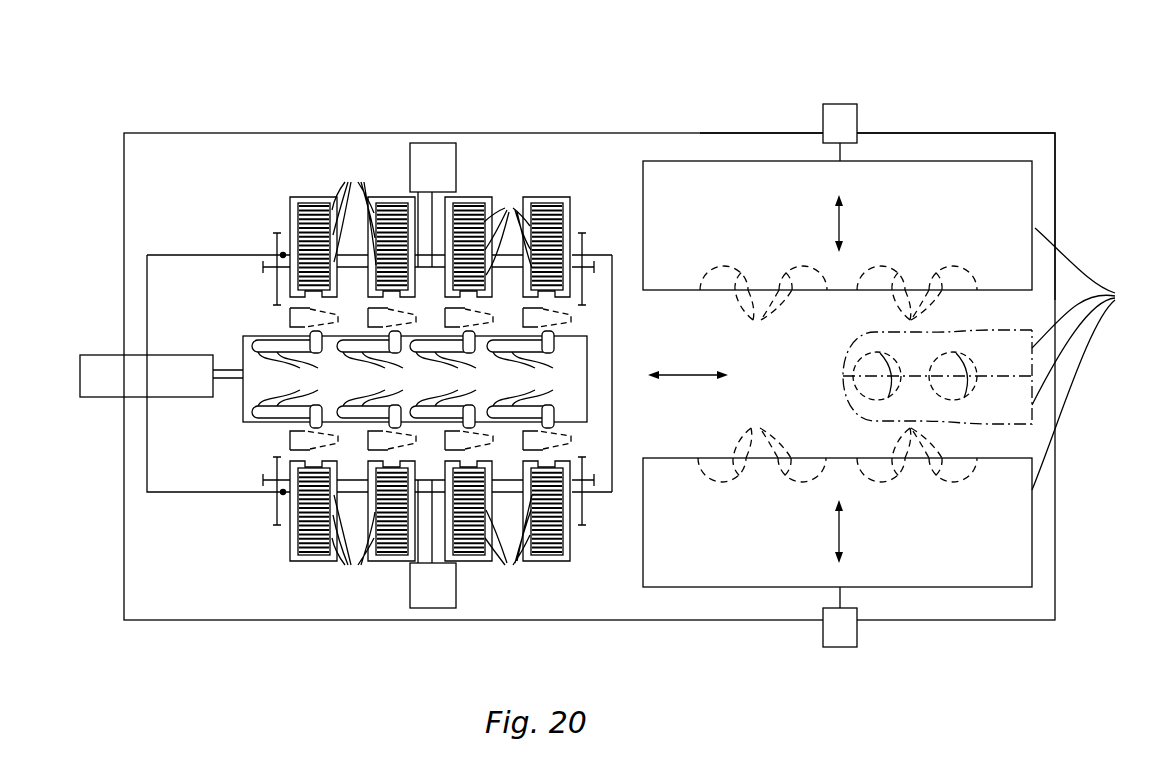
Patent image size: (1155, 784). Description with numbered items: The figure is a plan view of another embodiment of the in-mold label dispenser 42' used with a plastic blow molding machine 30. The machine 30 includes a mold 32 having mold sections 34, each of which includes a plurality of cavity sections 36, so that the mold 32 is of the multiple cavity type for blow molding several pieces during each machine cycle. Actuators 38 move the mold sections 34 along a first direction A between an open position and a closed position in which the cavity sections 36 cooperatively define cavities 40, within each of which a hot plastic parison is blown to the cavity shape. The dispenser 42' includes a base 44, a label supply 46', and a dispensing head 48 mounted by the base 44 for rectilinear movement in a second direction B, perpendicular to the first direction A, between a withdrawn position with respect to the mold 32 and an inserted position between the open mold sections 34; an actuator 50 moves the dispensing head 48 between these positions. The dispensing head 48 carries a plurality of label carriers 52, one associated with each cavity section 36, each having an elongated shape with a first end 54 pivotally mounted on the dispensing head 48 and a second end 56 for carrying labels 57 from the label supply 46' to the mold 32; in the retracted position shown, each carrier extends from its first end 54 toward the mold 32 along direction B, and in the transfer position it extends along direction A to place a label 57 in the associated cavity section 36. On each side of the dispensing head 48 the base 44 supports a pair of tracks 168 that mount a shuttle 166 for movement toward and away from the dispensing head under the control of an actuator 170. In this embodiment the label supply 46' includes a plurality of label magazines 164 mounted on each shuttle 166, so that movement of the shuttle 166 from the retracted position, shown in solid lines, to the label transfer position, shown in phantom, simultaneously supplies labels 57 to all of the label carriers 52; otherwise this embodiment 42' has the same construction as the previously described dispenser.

The plastic blow molding machine 30 is at (733, 128).
The mold 32 is at (1042, 204).
The mold sections 34 is at (1087, 359).
The cavity sections 36 is at (837, 374).
The actuators 38 is at (857, 119).
The cavity 40 is at (937, 377).
The in-mold label dispenser 42' is at (589, 318).
The base 44 is at (205, 496).
The label supply 46' is at (433, 297).
The dispensing head 48 is at (250, 332).
The actuator 50 is at (84, 399).
The label carriers 52 is at (509, 406).
The first end 54 is at (482, 406).
The second end 56 is at (550, 405).
The labels 57 is at (432, 373).
The label magazine 164 is at (294, 198).
The shuttle 166 is at (283, 253).
The tracks 168 is at (276, 240).
The actuator 170 is at (430, 150).
The first direction A is at (840, 222).
The second direction B is at (688, 375).